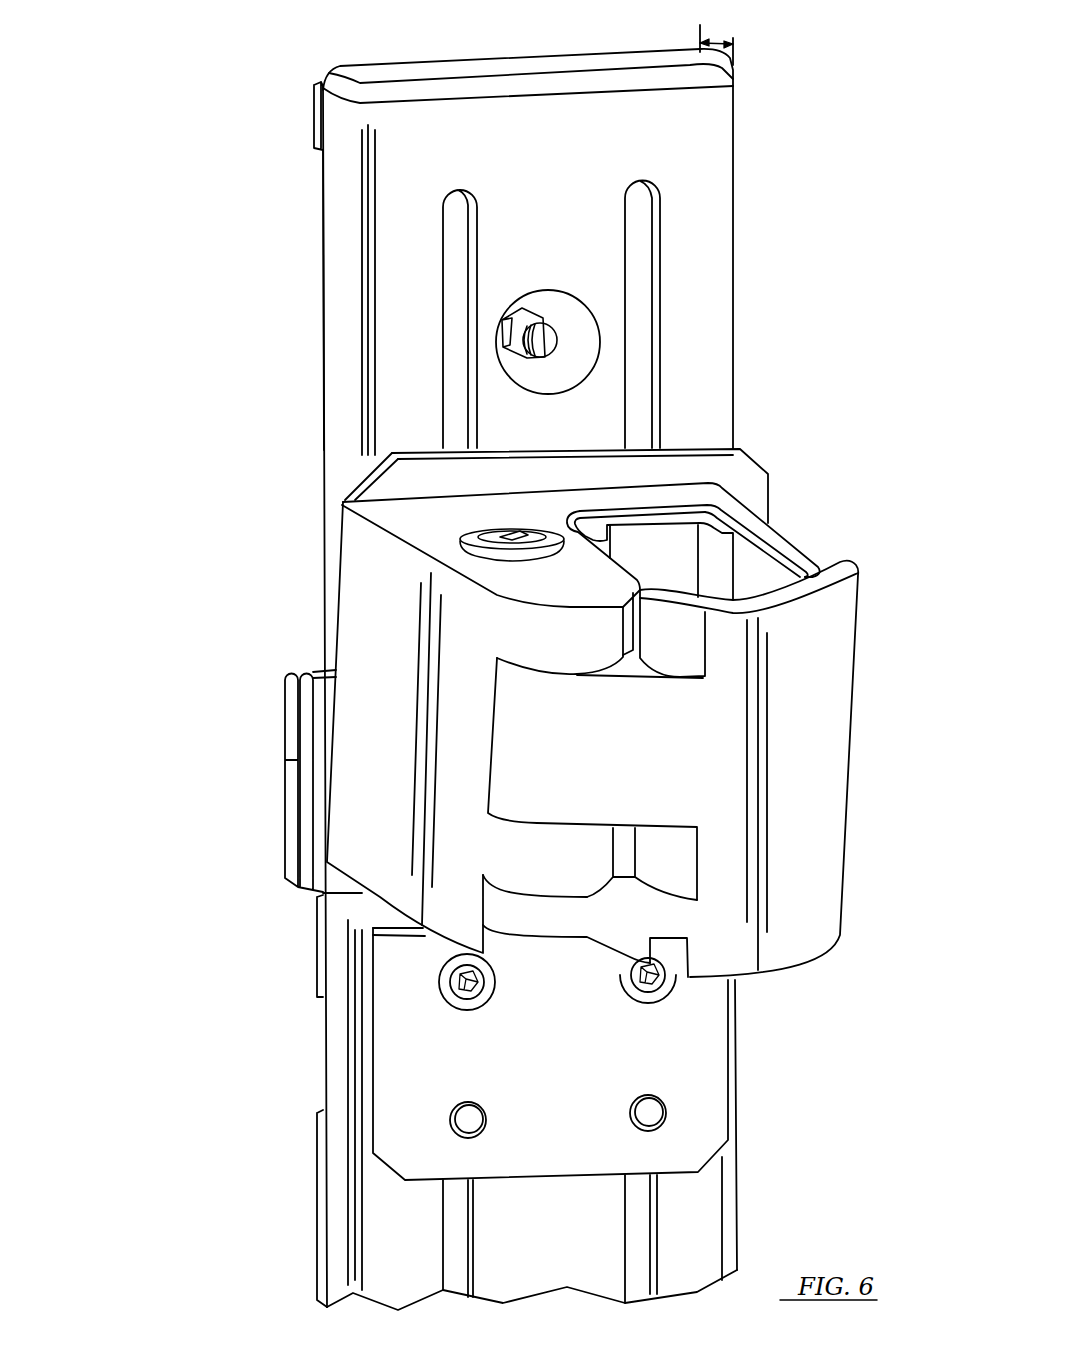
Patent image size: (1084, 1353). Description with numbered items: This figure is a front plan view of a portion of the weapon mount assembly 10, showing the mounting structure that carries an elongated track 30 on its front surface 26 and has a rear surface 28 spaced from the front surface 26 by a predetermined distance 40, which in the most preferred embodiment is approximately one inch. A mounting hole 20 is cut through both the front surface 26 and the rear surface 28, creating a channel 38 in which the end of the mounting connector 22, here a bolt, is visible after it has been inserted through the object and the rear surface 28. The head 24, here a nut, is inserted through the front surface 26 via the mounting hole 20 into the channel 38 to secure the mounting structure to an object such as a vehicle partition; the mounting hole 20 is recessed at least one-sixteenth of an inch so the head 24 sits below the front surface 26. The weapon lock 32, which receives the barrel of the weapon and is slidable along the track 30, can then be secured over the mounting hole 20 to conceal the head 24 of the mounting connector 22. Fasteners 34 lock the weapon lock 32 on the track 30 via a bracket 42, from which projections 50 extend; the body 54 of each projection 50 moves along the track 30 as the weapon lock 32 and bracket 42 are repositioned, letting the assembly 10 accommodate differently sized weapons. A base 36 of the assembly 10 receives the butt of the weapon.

The weapon mount assembly 10 is at (180, 96).
The mounting hole 20 is at (600, 362).
The mounting connector 22 is at (503, 363).
The head 24 is at (500, 345).
The front surface 26 is at (703, 187).
The rear surface 28 is at (323, 217).
The elongated track 30 is at (443, 273).
The weapon lock 32 is at (367, 788).
The fasteners 34 is at (443, 978).
The base 36 is at (472, 537).
The channel 38 is at (563, 343).
The predetermined distance 40 is at (716, 42).
The bracket 42 is at (673, 1033).
The projections 50 is at (657, 1130).
The body 54 is at (663, 1113).